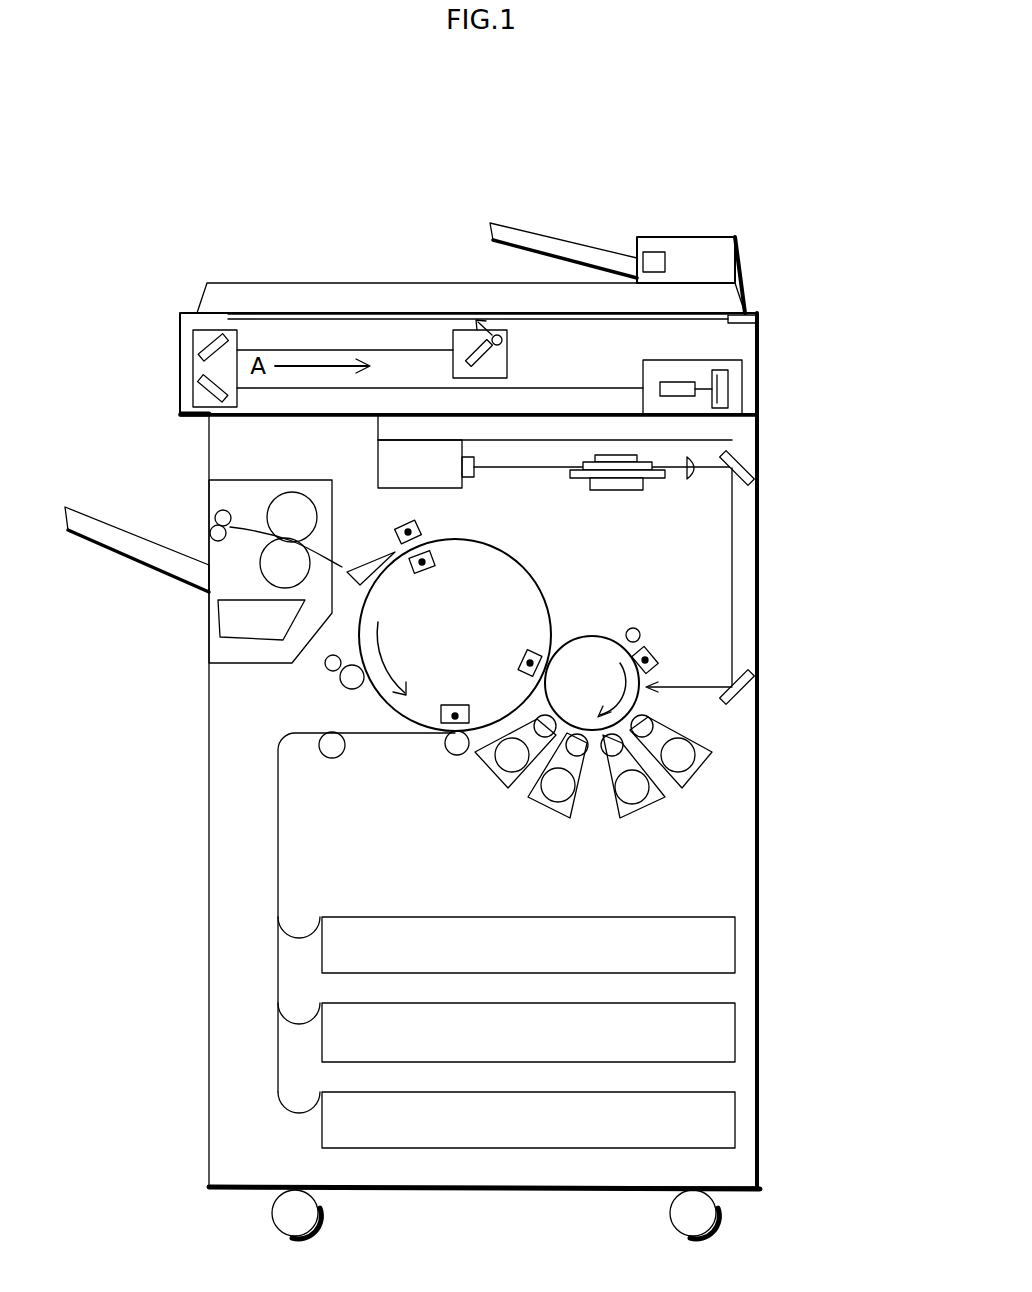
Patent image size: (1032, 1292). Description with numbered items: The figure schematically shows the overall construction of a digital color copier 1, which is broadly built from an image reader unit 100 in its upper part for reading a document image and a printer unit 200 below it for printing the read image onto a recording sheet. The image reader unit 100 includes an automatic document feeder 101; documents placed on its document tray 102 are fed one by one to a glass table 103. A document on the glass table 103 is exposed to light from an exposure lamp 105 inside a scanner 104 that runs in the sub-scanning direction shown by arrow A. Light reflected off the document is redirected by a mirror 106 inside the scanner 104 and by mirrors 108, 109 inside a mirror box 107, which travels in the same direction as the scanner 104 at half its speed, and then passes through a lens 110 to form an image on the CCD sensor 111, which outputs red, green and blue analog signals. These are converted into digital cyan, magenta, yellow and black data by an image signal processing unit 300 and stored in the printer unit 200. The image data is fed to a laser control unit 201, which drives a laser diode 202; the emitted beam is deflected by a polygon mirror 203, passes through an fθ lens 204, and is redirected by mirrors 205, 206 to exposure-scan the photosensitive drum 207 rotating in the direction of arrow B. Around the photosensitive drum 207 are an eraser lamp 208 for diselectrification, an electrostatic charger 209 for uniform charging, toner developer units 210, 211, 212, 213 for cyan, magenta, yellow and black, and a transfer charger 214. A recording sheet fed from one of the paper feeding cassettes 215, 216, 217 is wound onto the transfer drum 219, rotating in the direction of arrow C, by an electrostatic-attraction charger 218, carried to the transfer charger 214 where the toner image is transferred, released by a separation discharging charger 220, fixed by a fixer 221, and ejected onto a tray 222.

The digital color copier 1 is at (487, 139).
The image reader unit 100 is at (804, 298).
The automatic document feeder 101 is at (335, 281).
The document tray 102 is at (545, 230).
The glass table 103 is at (727, 334).
The scanner 104 is at (507, 362).
The exposure lamp 105 is at (507, 343).
The mirror 106 is at (453, 360).
The mirror box 107 is at (237, 340).
The mirror 108 is at (197, 345).
The mirror 109 is at (197, 395).
The lens 110 is at (662, 382).
The CCD sensor 111 is at (730, 388).
The printer unit 200 is at (812, 652).
The image signal processing unit 300 is at (737, 431).
The laser control unit 201 is at (378, 460).
The laser diode 202 is at (474, 477).
The polygon mirror 203 is at (630, 492).
The fθ lens 204 is at (694, 480).
The mirror 205 is at (755, 468).
The mirror 206 is at (757, 690).
The photosensitive drum 207 is at (590, 637).
The eraser lamp 208 is at (638, 629).
The electrostatic charger 209 is at (658, 660).
The toner developer unit 210 is at (697, 775).
The toner developer unit 211 is at (638, 813).
The toner developer unit 212 is at (548, 808).
The toner developer unit 213 is at (492, 778).
The transfer charger 214 is at (520, 658).
The paper feeding cassette 215 is at (485, 917).
The paper feeding cassette 216 is at (485, 1003).
The paper feeding cassette 217 is at (485, 1092).
The electrostatic-attraction charger 218 is at (450, 704).
The transfer drum 219 is at (535, 577).
The separation discharging charger 220 is at (420, 526).
The fixer 221 is at (243, 664).
The tray 222 is at (137, 535).